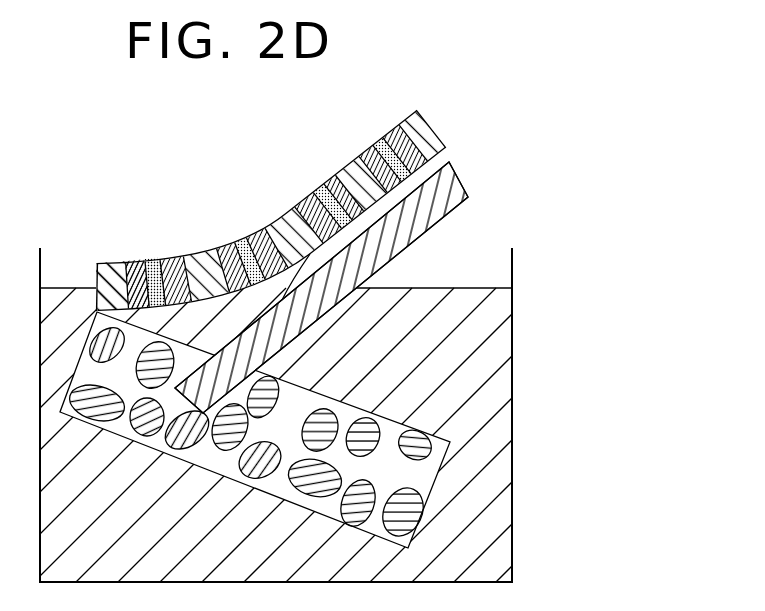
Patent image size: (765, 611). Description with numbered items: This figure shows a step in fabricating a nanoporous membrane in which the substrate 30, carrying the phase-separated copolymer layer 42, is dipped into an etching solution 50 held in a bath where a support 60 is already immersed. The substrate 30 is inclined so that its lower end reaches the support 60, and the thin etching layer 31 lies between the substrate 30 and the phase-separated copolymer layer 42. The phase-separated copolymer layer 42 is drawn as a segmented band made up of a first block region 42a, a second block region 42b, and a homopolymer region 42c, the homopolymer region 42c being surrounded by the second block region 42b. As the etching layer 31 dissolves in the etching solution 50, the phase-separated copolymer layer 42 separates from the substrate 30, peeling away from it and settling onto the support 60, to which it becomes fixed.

The substrate 30 is at (447, 187).
The etching layer 31 is at (440, 158).
The phase-separated copolymer layer 42 is at (269, 202).
The first block region 42a is at (108, 262).
The second block region 42b is at (134, 260).
The homopolymer region 42c is at (157, 262).
The etching solution 50 is at (488, 549).
The support 60 is at (460, 457).